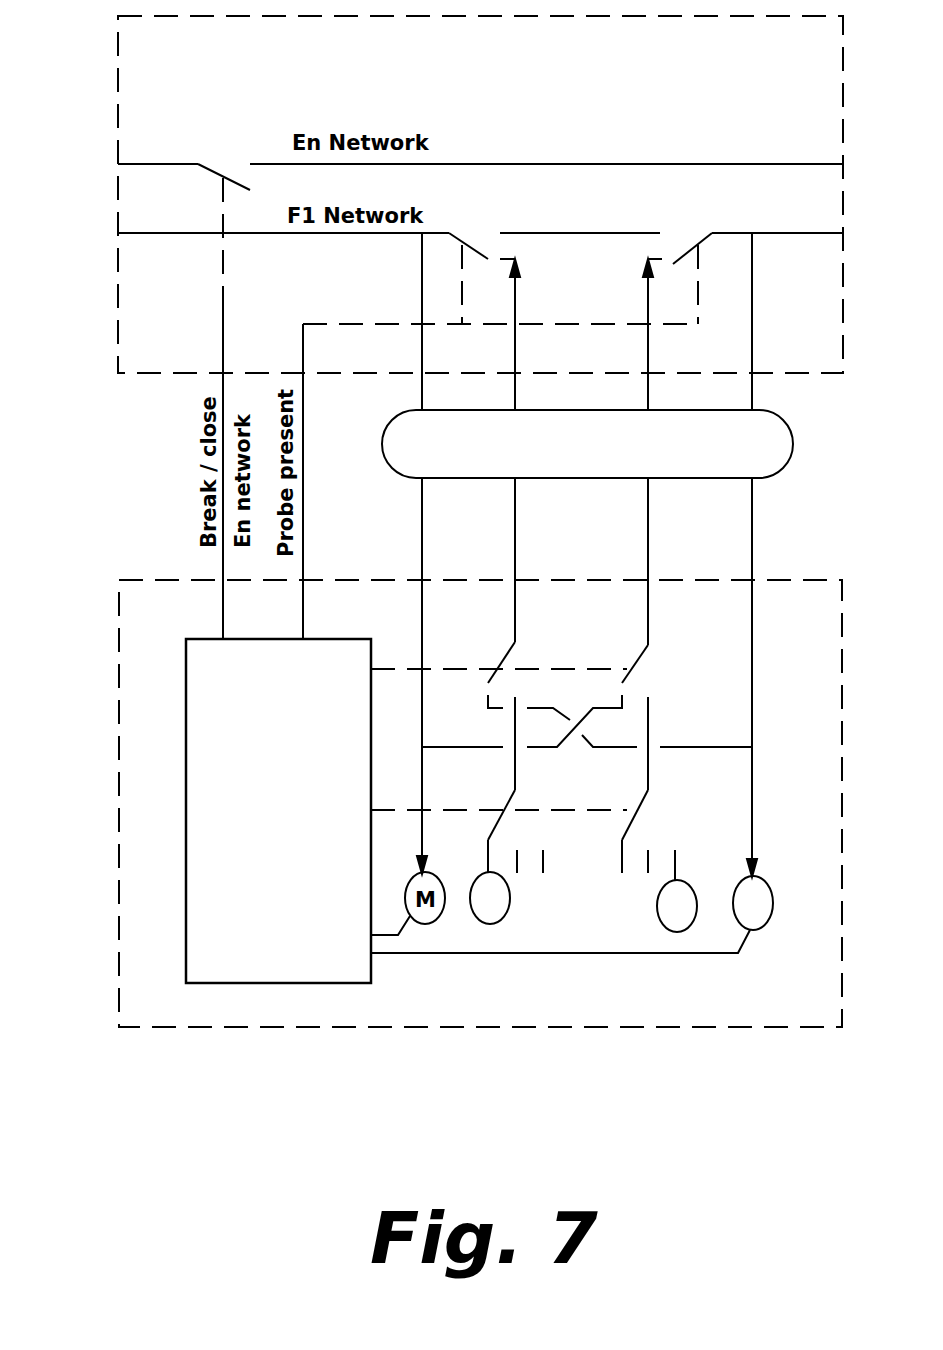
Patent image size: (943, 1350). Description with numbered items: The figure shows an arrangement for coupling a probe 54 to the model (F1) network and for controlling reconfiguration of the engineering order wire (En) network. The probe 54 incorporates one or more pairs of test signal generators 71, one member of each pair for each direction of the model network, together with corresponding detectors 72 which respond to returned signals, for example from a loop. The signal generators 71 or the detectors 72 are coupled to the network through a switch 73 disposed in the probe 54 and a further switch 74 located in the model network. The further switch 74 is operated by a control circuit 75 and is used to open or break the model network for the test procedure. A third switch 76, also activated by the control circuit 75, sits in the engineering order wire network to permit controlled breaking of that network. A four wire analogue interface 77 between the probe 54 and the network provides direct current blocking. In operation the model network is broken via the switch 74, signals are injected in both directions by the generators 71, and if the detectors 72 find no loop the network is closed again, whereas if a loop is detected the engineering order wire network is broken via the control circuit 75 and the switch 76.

The probe 54 is at (106, 652).
The test signal generators 71 is at (675, 932).
The detectors 72 is at (773, 905).
The switch 73 is at (590, 717).
The further switch 74 is at (700, 245).
The control circuit 75 is at (186, 834).
The third switch 76 is at (213, 163).
The four wire analogue interface 77 is at (793, 452).